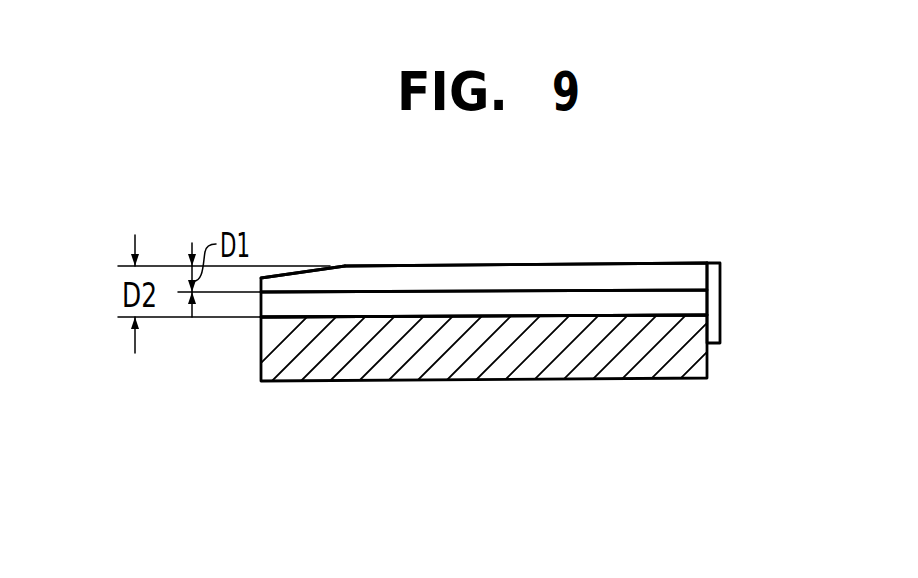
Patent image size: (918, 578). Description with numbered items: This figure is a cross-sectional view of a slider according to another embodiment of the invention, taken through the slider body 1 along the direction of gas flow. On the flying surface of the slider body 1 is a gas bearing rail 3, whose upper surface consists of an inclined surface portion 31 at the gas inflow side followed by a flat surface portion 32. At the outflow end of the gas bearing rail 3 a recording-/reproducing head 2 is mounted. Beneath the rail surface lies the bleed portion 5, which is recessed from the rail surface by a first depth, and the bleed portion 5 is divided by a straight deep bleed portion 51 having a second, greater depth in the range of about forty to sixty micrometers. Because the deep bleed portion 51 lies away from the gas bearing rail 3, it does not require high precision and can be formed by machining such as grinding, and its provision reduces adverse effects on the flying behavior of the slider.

The slider body 1 is at (540, 384).
The recording-/reproducing head 2 is at (721, 305).
The gas bearing rail 3 is at (590, 257).
The inclined surface portion 31 is at (287, 273).
The flat surface portion 32 is at (671, 263).
The bleed portion 5 is at (483, 291).
The deep bleed portion 51 is at (384, 316).